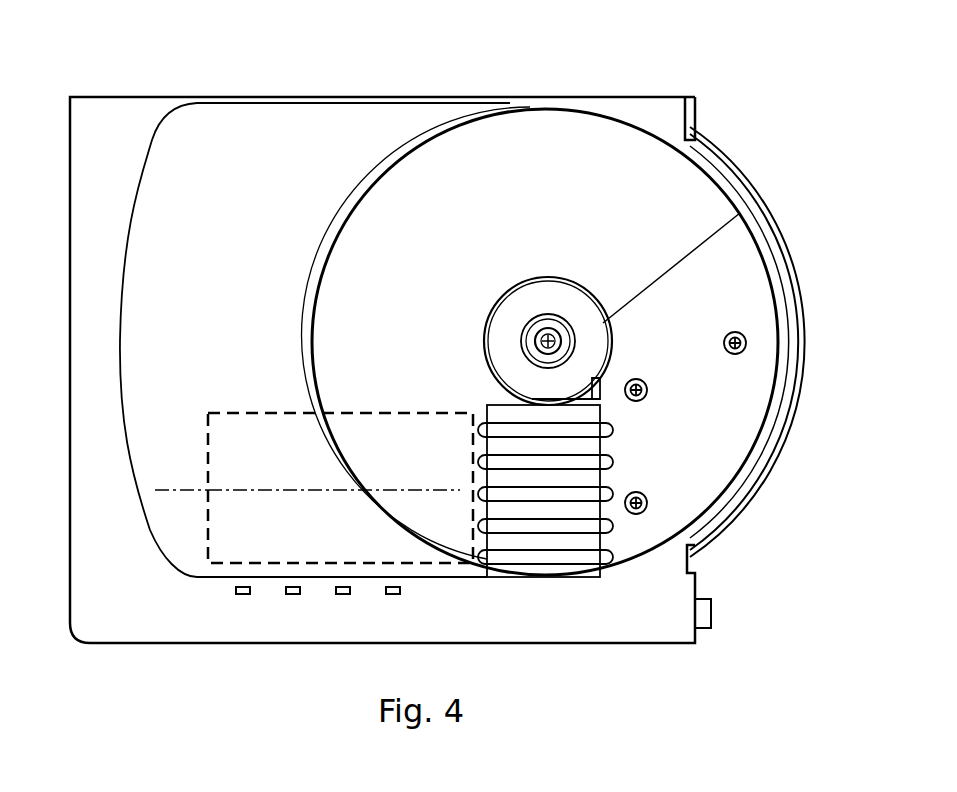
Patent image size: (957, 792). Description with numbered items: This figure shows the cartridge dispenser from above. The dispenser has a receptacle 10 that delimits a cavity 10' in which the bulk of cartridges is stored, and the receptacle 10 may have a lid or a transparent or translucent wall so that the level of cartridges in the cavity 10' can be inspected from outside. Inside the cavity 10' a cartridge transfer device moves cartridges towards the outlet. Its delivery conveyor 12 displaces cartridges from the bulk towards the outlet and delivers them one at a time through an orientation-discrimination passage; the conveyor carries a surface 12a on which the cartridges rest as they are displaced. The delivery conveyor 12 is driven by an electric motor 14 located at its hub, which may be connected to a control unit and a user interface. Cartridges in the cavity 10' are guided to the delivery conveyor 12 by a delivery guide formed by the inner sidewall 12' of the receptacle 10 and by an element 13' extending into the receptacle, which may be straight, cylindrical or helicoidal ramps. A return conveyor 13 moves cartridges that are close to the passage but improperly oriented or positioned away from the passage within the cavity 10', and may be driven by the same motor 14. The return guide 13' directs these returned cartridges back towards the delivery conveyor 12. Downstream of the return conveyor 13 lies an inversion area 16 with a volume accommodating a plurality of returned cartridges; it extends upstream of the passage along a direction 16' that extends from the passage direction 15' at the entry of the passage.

The receptacle 10 is at (381, 340).
The cavity 10' is at (416, 288).
The delivery conveyor 12 is at (681, 295).
The inner sidewall 12' is at (315, 307).
The disc surface 12a is at (520, 170).
The return conveyor 13 is at (583, 491).
The return guide 13' is at (661, 267).
The electric motor 14 is at (530, 298).
The passage direction 15' is at (334, 412).
The inversion area 16 is at (322, 439).
The direction 16' is at (175, 436).